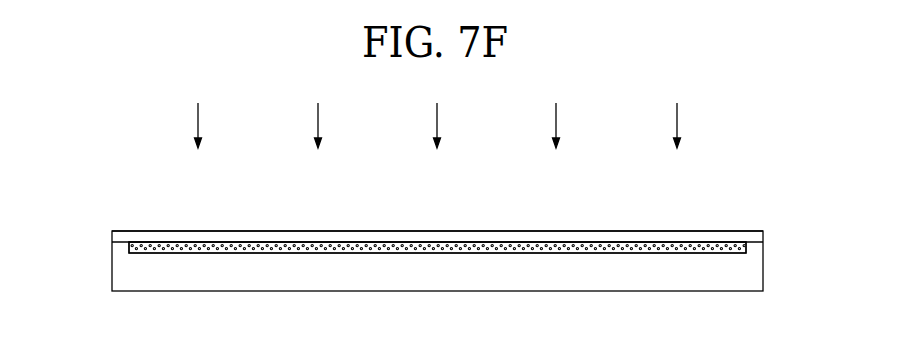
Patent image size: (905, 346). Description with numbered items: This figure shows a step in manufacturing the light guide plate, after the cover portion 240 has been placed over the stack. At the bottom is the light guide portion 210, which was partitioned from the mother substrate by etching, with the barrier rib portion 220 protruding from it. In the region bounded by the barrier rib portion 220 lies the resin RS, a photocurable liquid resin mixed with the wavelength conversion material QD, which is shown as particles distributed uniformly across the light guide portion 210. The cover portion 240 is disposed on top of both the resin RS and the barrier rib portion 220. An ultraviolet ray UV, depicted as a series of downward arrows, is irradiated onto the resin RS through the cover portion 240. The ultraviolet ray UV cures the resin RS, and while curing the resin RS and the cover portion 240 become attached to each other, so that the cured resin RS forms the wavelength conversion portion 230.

The light guide portion 210 is at (753, 275).
The barrier rib portion 220 is at (765, 247).
The wavelength conversion portion 230 is at (437, 206).
The cover portion 240 is at (765, 237).
The resin RS is at (330, 249).
The wavelength conversion material QD is at (318, 192).
The ultraviolet ray UV is at (679, 123).